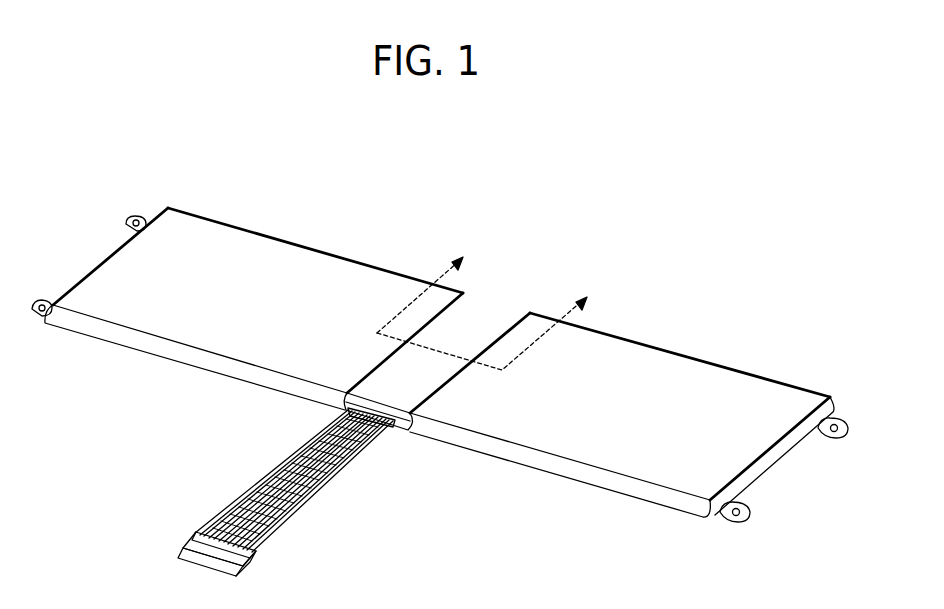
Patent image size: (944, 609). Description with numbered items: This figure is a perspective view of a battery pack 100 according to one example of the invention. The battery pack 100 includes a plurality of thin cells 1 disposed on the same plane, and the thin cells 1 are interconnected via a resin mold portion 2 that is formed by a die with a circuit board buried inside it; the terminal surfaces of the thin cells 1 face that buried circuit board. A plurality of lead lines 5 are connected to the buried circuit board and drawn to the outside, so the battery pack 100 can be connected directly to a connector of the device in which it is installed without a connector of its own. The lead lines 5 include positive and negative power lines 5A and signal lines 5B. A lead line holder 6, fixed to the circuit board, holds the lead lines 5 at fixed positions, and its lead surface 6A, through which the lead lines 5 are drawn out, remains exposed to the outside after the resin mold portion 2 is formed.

The battery pack 100 is at (692, 225).
The thin cell 1 is at (260, 257).
The resin mold portion 2 is at (478, 320).
The lead line 5 is at (440, 495).
The power line 5A is at (360, 455).
The signal line 5B is at (327, 483).
The lead line holder 6 is at (415, 396).
The lead surface 6A is at (350, 407).